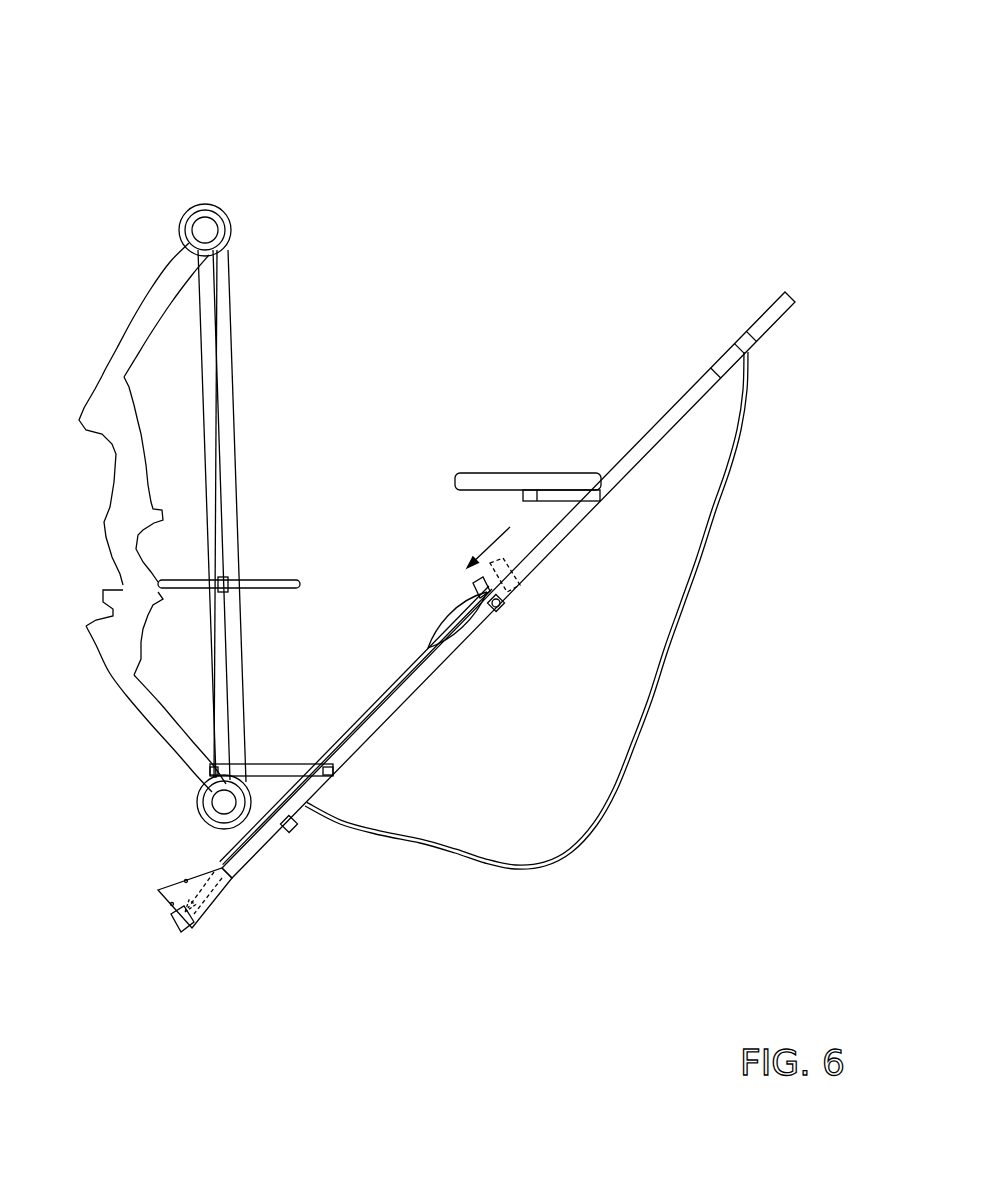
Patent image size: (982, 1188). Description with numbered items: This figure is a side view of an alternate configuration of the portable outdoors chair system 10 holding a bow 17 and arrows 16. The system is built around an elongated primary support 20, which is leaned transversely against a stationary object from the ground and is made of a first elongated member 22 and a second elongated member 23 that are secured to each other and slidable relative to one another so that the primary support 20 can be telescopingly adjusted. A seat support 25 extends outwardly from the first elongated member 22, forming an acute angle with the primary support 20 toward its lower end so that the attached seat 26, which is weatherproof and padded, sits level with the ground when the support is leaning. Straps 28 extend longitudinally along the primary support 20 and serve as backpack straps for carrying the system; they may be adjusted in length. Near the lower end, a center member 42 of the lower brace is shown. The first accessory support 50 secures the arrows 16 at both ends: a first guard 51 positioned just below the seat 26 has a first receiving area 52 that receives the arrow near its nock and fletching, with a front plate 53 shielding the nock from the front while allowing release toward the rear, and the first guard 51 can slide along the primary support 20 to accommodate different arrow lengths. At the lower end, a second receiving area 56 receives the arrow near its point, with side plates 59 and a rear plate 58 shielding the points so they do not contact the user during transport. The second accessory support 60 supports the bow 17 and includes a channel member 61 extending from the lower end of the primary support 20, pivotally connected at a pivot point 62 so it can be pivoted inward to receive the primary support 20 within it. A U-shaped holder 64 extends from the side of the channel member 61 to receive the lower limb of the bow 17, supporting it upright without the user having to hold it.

The portable outdoors chair system 10 is at (417, 515).
The arrows 16 is at (280, 807).
The bow 17 is at (158, 287).
The primary support 20 is at (508, 585).
The first elongated member 22 is at (657, 423).
The second elongated member 23 is at (258, 852).
The seat support 25 is at (563, 500).
The seat 26 is at (485, 472).
The straps 28 is at (605, 810).
The center member 42 is at (172, 925).
The first accessory support 50 is at (183, 919).
The first guard 51 is at (503, 604).
The first receiving area 52 is at (473, 586).
The front plate 53 is at (470, 582).
The second receiving area 56 is at (185, 882).
The rear plate 58 is at (205, 912).
The side plates 59 is at (142, 876).
The second accessory support 60 is at (300, 755).
The channel member 61 is at (262, 766).
The pivot point 62 is at (335, 770).
The holder 64 is at (205, 767).